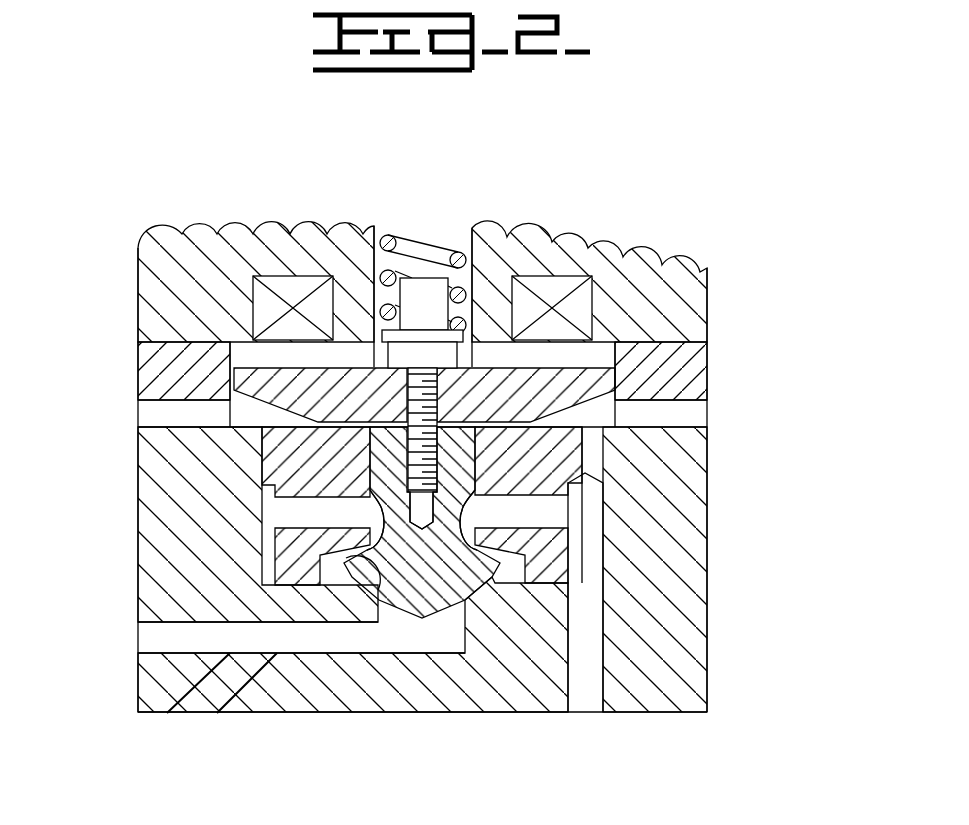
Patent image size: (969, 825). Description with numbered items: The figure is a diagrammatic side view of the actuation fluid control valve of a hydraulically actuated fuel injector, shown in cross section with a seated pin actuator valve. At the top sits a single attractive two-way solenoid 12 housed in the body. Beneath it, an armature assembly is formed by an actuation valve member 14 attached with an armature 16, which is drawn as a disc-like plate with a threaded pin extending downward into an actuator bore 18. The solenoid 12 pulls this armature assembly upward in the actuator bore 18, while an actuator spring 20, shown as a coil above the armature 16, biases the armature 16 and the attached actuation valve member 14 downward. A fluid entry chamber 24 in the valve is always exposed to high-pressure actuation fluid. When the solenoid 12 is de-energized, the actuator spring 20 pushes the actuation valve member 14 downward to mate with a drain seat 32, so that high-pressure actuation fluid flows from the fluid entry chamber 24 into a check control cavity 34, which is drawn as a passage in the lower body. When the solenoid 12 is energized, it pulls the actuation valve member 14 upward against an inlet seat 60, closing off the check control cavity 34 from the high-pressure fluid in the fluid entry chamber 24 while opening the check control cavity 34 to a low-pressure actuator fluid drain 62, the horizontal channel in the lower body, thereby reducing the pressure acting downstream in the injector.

The two-way solenoid 12 is at (198, 296).
The actuation valve member 14 is at (422, 573).
The armature 16 is at (347, 388).
The actuator bore 18 is at (473, 440).
The actuator spring 20 is at (403, 245).
The fluid entry chamber 24 is at (470, 522).
The drain seat 32 is at (367, 553).
The check control cavity 34 is at (217, 690).
The inlet seat 60 is at (462, 520).
The low-pressure actuator fluid drain 62 is at (173, 638).